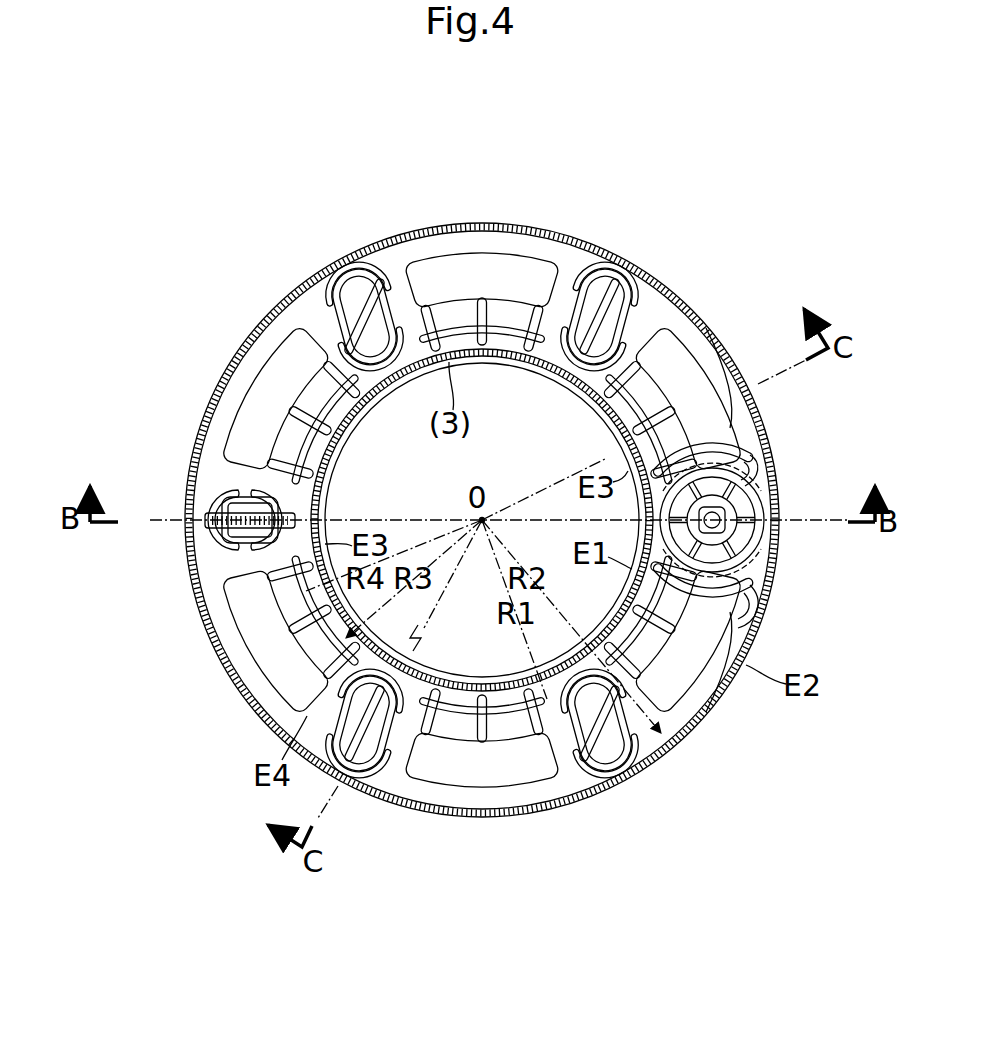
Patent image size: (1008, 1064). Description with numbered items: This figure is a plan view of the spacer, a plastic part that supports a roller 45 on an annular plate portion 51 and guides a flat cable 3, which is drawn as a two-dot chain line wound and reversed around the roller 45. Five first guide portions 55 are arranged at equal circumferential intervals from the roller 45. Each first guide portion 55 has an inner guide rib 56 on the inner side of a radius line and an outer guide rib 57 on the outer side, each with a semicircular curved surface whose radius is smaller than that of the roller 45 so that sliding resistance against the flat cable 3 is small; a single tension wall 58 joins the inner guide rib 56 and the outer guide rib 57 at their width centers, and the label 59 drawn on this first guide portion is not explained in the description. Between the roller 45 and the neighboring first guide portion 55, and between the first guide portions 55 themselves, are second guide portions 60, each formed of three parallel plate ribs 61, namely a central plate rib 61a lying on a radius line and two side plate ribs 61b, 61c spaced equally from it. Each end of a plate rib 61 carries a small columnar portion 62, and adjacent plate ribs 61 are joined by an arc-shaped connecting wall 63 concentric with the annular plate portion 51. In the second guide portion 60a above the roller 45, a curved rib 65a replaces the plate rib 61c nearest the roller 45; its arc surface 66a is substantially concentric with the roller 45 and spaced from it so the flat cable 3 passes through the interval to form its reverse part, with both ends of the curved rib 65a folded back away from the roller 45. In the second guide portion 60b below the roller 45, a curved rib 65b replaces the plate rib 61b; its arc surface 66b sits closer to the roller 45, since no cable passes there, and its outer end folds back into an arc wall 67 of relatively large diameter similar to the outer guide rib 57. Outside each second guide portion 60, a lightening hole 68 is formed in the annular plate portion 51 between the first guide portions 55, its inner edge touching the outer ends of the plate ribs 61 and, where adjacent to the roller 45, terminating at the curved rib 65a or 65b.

The flat cable 3 is at (456, 224).
The annular plate portion 51 is at (390, 262).
The first guide portion 55 is at (176, 561).
The inner guide rib 56 is at (328, 492).
The outer guide rib 57 is at (204, 494).
The tension wall 58 is at (195, 540).
The rib 59 is at (250, 538).
The second guide portion 60 is at (480, 764).
The second guide portion 60a is at (620, 410).
The second guide portion 60b is at (612, 614).
The plate rib 61 is at (508, 810).
The central plate rib 61a is at (484, 732).
The plate rib 61b is at (534, 732).
The plate rib 61c is at (449, 784).
The columnar portion 62 is at (430, 690).
The connecting wall 63 is at (506, 706).
The roller 45 is at (763, 546).
The curved rib 65a is at (738, 430).
The curved rib 65b is at (760, 580).
The arc surface 66a is at (703, 396).
The arc surface 66b is at (722, 662).
The arc wall 67 is at (748, 624).
The lightening hole 68 is at (420, 774).